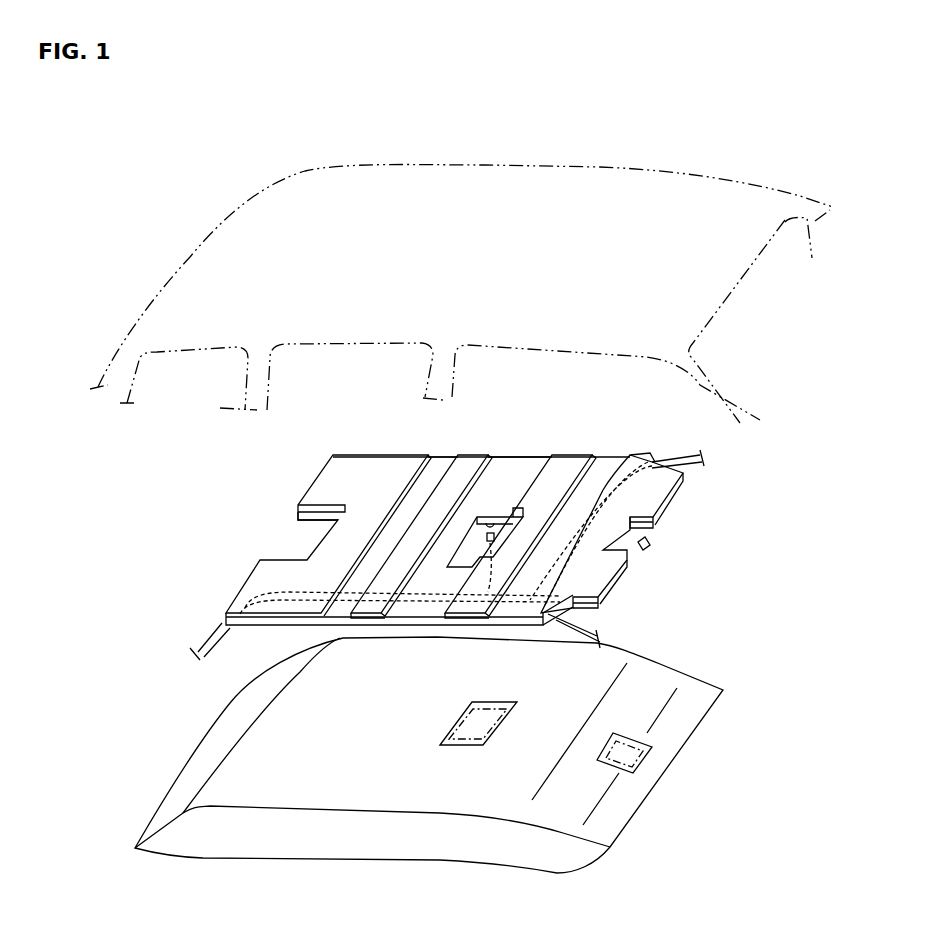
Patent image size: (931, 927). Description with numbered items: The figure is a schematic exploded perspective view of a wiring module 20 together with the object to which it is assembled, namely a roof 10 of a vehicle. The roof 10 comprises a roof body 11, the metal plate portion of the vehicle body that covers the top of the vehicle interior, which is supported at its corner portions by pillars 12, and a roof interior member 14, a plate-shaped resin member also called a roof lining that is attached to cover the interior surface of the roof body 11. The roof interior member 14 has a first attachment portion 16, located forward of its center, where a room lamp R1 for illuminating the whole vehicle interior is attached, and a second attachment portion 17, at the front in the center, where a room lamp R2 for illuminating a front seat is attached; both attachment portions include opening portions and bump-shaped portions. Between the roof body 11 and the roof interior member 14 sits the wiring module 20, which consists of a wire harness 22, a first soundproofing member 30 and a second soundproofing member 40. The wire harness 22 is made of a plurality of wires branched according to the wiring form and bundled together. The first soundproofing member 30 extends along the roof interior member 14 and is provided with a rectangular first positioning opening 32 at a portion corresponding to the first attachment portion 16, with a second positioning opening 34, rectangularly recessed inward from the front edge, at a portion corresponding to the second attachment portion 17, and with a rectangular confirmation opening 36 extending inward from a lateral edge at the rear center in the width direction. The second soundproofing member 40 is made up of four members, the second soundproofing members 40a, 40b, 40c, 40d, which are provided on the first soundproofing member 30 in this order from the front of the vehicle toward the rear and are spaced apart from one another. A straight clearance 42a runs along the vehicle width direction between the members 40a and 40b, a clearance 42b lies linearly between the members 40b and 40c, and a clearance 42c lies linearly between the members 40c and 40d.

The roof 10 is at (694, 157).
The roof body 11 is at (572, 164).
The pillars 12 is at (143, 378).
The roof interior member 14 is at (527, 862).
The first attachment portion 16 is at (492, 706).
The second attachment portion 17 is at (652, 748).
The room lamp R1 is at (457, 719).
The room lamp R2 is at (647, 767).
The wiring module 20 is at (515, 455).
The wire harness 22 is at (407, 603).
The first soundproofing member 30 is at (455, 627).
The first positioning opening 32 is at (490, 530).
The second positioning opening 34 is at (653, 524).
The confirmation opening 36 is at (298, 519).
The second soundproofing member 40 is at (570, 460).
The second soundproofing member 40a is at (685, 478).
The second soundproofing member 40b is at (575, 465).
The second soundproofing member 40c is at (470, 462).
The second soundproofing member 40d is at (375, 470).
The clearance 42a is at (650, 460).
The clearance 42b is at (545, 462).
The clearance 42c is at (443, 465).